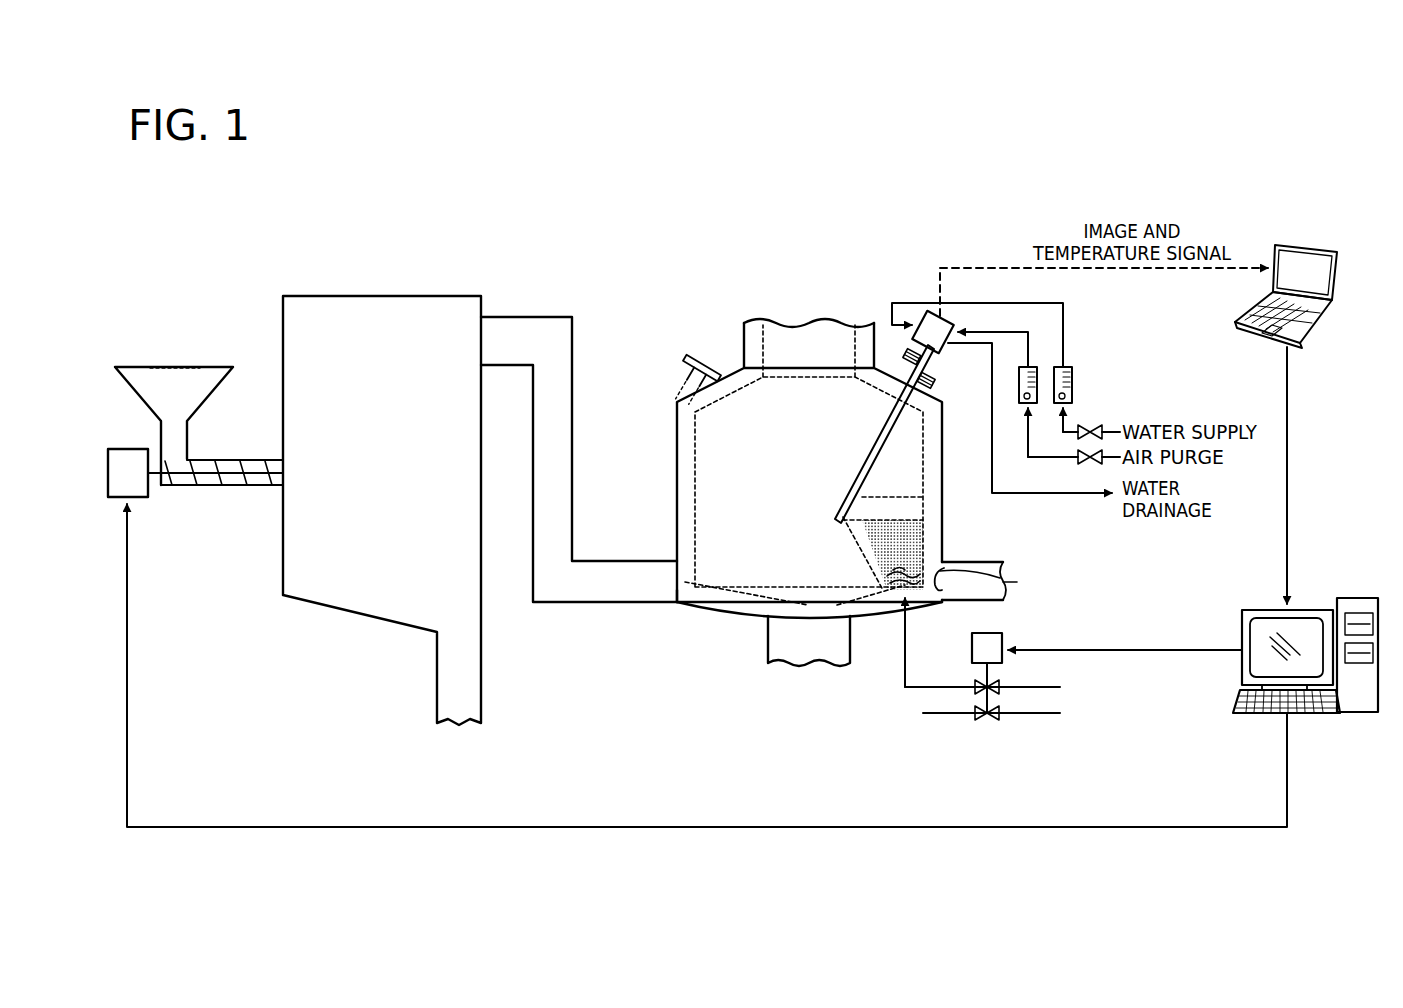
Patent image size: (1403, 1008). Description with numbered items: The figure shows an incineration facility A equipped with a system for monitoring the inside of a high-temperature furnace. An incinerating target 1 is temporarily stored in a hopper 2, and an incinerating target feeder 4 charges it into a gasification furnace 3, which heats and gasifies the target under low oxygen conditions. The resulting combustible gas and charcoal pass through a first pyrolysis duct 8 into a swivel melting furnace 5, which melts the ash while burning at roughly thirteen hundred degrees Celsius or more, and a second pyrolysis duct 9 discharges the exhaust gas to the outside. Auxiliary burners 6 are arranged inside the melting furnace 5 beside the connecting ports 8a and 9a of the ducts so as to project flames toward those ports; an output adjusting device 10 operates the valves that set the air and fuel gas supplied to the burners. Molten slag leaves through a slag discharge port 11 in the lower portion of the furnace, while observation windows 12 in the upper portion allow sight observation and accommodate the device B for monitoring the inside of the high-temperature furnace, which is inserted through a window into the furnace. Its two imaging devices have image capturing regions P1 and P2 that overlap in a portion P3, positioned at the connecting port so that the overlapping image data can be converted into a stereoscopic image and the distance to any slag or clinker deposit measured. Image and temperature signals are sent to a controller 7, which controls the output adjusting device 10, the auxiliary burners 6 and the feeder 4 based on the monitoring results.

The incinerating target 1 is at (176, 375).
The hopper 2 is at (128, 367).
The gasification furnace 3 is at (380, 296).
The incinerating target feeder 4 is at (200, 487).
The melting furnace 5 is at (676, 465).
The auxiliary burner 6 is at (884, 577).
The controller 7 is at (1307, 245).
The first pyrolysis duct 8 is at (543, 317).
The connecting port 8a is at (683, 605).
The second pyrolysis duct 9 is at (988, 562).
The connecting port 9a is at (936, 603).
The output adjusting device 10 is at (1000, 633).
The slag discharge port 11 is at (768, 637).
The observation window 12 is at (697, 360).
The incineration facility A is at (1262, 143).
The device for monitoring the inside of a high-temperature furnace B is at (860, 457).
The image capturing region P1 is at (856, 545).
The image capturing region P2 is at (893, 497).
The overlapping portion P3 is at (928, 527).